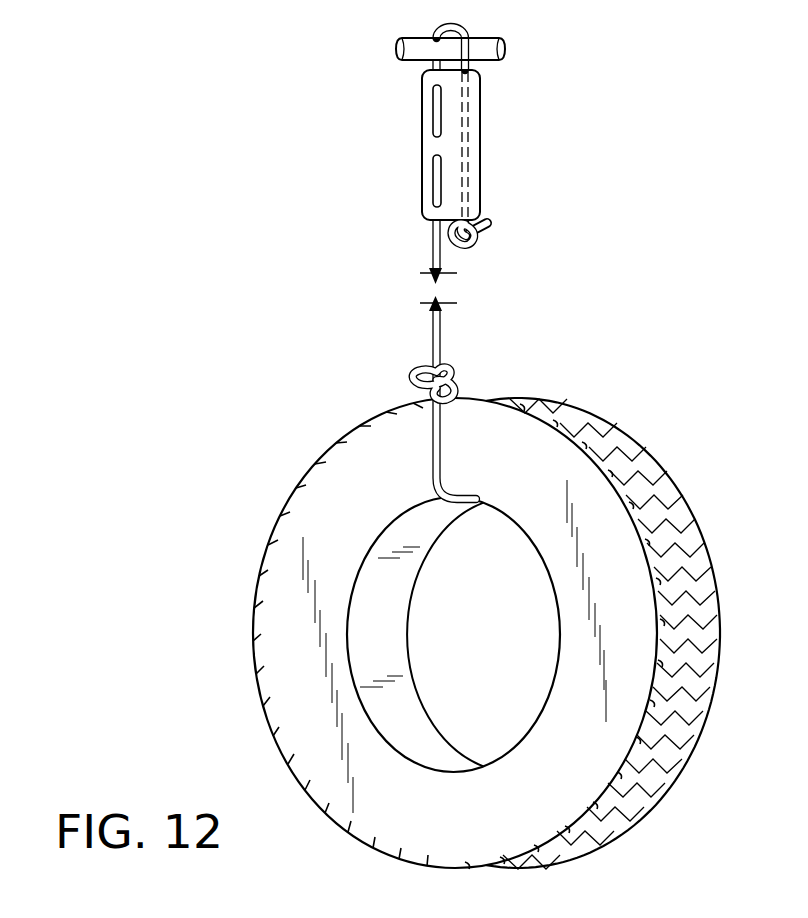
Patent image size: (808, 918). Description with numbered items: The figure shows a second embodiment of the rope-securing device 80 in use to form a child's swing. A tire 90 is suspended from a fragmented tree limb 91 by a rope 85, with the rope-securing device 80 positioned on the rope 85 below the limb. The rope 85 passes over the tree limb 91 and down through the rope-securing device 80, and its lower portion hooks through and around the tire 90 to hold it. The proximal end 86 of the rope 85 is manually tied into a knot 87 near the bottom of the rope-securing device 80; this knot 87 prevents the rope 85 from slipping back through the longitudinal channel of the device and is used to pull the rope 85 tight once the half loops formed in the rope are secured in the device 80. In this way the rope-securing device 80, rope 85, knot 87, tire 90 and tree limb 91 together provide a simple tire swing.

The rope-securing device 80 is at (494, 144).
The rope 85 is at (432, 250).
The proximal end 86 is at (509, 215).
The knot 87 is at (477, 248).
The tire 90 is at (726, 529).
The fragmented tree limb 91 is at (526, 55).